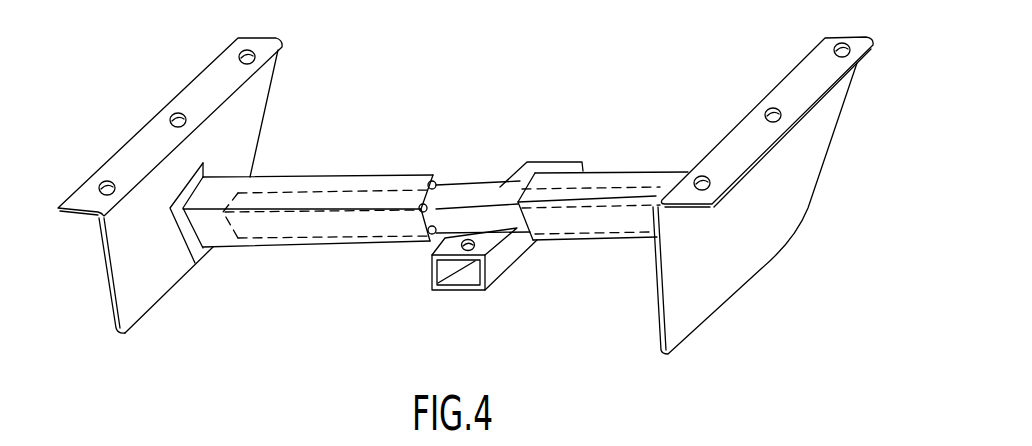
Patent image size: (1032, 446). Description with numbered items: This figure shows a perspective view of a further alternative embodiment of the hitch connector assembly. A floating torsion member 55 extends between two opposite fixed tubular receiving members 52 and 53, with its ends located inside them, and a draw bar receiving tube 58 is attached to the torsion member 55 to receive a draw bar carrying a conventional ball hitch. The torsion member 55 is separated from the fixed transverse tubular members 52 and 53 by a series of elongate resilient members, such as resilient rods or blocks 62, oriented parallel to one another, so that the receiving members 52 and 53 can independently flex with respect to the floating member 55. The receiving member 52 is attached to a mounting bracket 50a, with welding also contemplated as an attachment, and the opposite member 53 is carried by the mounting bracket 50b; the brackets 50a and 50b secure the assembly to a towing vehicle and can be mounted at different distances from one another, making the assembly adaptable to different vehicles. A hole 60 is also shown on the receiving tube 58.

The mounting bracket 50a is at (172, 285).
The mounting bracket 50b is at (760, 260).
The fixed tubular receiving member 52 is at (390, 176).
The fixed tubular receiving member 53 is at (605, 188).
The floating torsion member 55 is at (468, 186).
The draw bar receiving tube 58 is at (515, 257).
The pin hole 60 is at (433, 254).
The resilient rods or blocks 62 is at (446, 186).